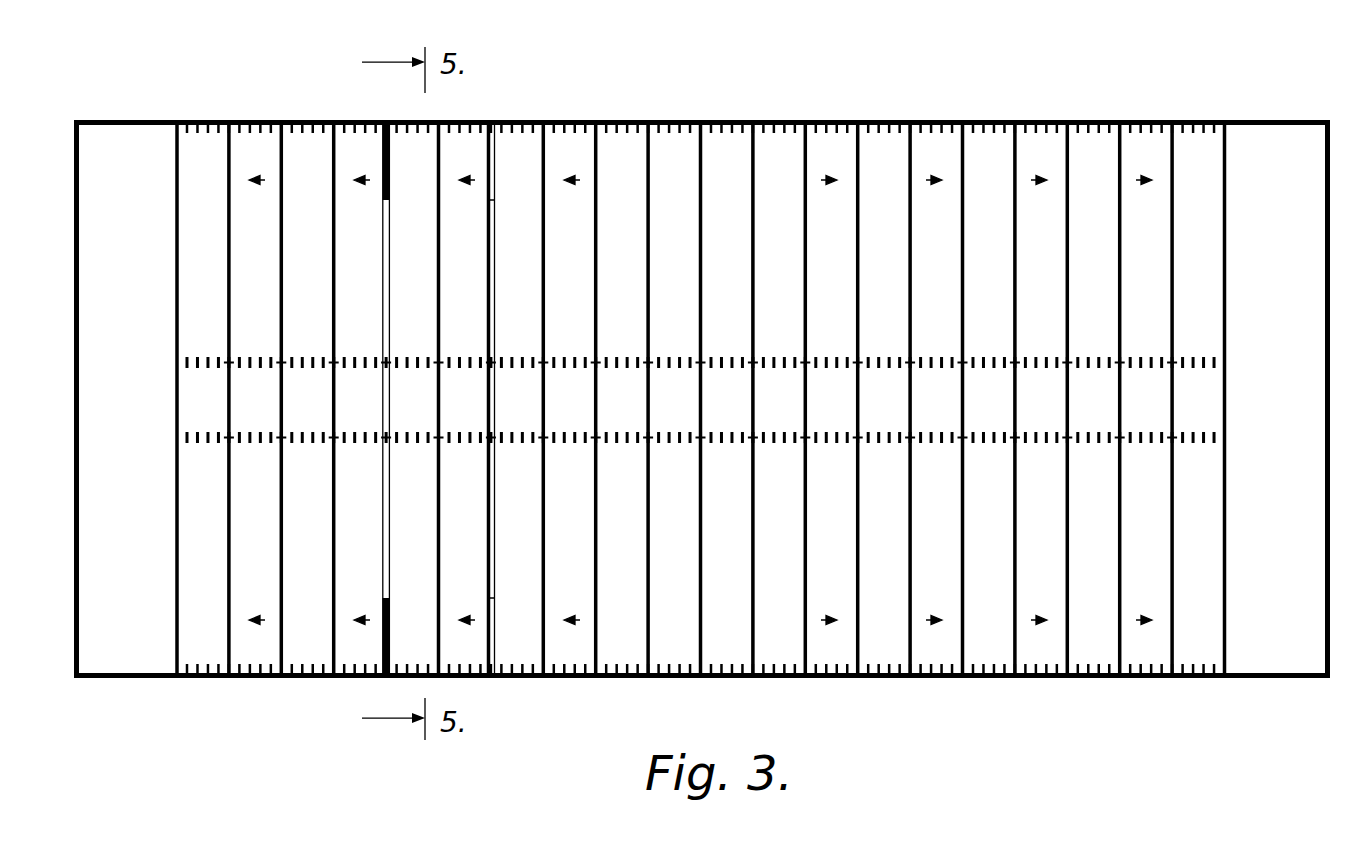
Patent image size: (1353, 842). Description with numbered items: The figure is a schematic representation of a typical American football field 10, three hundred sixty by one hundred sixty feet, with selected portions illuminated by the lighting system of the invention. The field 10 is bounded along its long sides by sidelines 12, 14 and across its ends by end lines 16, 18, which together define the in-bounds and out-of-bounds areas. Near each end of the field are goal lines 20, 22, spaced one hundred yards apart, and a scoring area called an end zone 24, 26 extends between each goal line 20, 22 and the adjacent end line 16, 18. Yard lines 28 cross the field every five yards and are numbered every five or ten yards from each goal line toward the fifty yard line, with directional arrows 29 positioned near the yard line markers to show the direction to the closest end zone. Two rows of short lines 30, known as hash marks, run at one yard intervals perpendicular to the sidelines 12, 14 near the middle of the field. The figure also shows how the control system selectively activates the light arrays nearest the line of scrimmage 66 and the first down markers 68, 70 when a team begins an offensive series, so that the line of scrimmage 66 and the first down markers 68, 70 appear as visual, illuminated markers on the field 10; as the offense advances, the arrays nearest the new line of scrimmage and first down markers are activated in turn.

The football field 10 is at (1048, 58).
The sideline 12 is at (764, 121).
The sideline 14 is at (813, 679).
The end line 16 is at (75, 646).
The end line 18 is at (1330, 626).
The goal line 20 is at (175, 205).
The goal line 22 is at (1227, 330).
The end zone 24 is at (166, 388).
The end zone 26 is at (1314, 464).
The yard lines 28 is at (333, 147).
The directional arrows 29 is at (358, 182).
The hash marks 30 is at (522, 345).
The line of scrimmage 66 is at (382, 260).
The first down marker 68 is at (389, 200).
The first down marker 70 is at (488, 193).